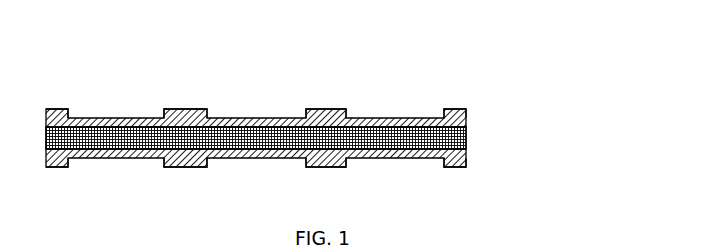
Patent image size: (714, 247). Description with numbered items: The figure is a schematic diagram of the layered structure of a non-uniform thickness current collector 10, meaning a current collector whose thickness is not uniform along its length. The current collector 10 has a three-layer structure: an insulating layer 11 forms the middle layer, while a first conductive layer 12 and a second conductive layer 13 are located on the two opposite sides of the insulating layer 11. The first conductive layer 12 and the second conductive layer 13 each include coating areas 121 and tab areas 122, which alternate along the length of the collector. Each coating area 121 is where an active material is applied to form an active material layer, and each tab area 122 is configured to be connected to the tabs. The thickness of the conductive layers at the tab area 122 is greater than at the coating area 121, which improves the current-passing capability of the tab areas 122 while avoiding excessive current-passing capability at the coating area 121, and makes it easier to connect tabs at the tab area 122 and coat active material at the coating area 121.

The non-uniform thickness current collector 10 is at (322, 118).
The insulating layer 11 is at (421, 121).
The first conductive layer 12 is at (256, 99).
The coating area 121 is at (240, 116).
The tab area 122 is at (189, 108).
The second conductive layer 13 is at (352, 163).